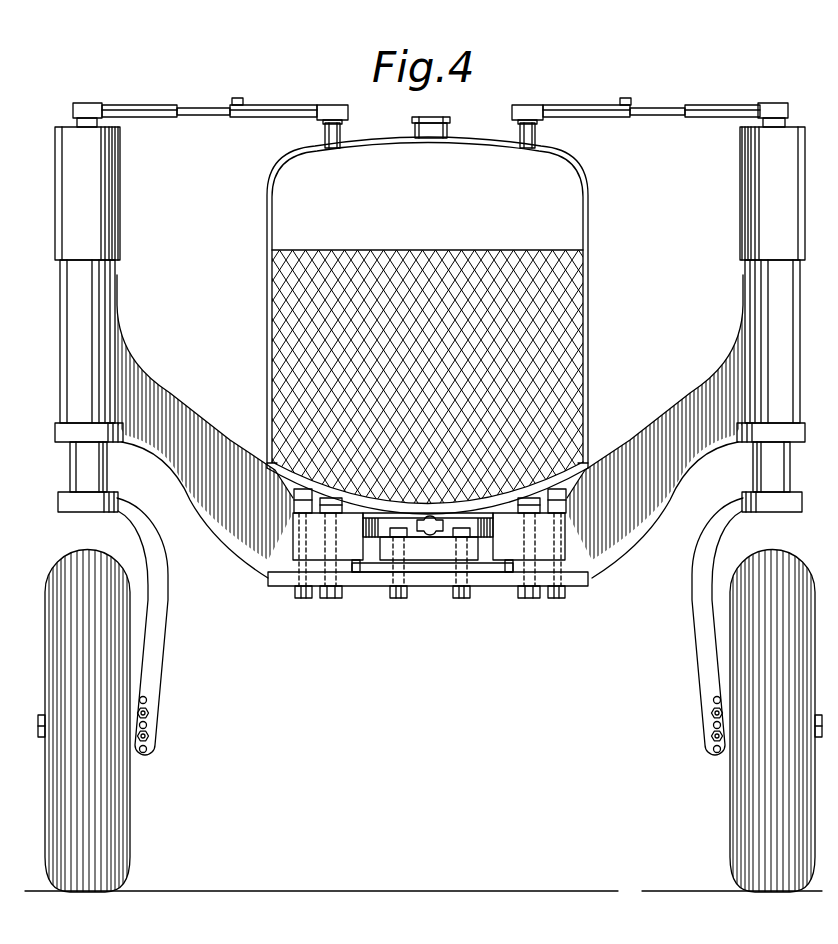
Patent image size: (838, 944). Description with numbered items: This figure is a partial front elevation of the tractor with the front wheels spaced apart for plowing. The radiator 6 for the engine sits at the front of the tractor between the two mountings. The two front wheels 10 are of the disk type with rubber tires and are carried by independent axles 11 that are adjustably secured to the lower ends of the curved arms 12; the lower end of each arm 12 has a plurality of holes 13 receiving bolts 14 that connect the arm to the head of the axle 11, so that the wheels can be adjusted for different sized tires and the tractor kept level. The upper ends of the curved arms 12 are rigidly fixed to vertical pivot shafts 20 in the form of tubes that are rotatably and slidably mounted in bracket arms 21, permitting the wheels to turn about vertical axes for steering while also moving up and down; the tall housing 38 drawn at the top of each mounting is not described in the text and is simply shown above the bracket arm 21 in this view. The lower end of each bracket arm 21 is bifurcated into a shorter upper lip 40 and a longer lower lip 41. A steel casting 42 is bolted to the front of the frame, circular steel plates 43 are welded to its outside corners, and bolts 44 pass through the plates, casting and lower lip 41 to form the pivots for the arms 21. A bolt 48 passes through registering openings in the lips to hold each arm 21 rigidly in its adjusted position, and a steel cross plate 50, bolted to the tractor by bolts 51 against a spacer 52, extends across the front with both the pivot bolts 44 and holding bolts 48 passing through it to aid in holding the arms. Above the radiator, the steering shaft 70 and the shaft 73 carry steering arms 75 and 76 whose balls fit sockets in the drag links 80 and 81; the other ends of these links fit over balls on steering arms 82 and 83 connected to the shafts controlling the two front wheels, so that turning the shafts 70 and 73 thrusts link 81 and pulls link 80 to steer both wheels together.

The radiator 6 is at (427, 315).
The front wheels 10 is at (131, 812).
The axles 11 is at (37, 725).
The curved arms 12 is at (155, 645).
The holes 13 is at (150, 700).
The bolts 14 is at (152, 713).
The vertical pivot shafts 20 is at (68, 470).
The bracket arms 21 is at (140, 365).
The cylinder 38 is at (120, 192).
The upper lip 40 is at (297, 503).
The lower lip 41 is at (359, 563).
The steel casting 42 is at (427, 553).
The circular steel plates 43 is at (318, 520).
The bolts 44 is at (337, 597).
The bolt 48 is at (303, 597).
The steel cross plate 50 is at (372, 580).
The bolts 51 is at (397, 587).
The spacer 52 is at (445, 570).
The steering shaft 70 is at (341, 127).
The shaft 73 is at (537, 135).
The steering arm 75 is at (325, 124).
The steering arm 76 is at (516, 122).
The drag link 80 is at (170, 106).
The drag link 81 is at (690, 104).
The steering arm 82 is at (78, 120).
The steering arm 83 is at (789, 121).